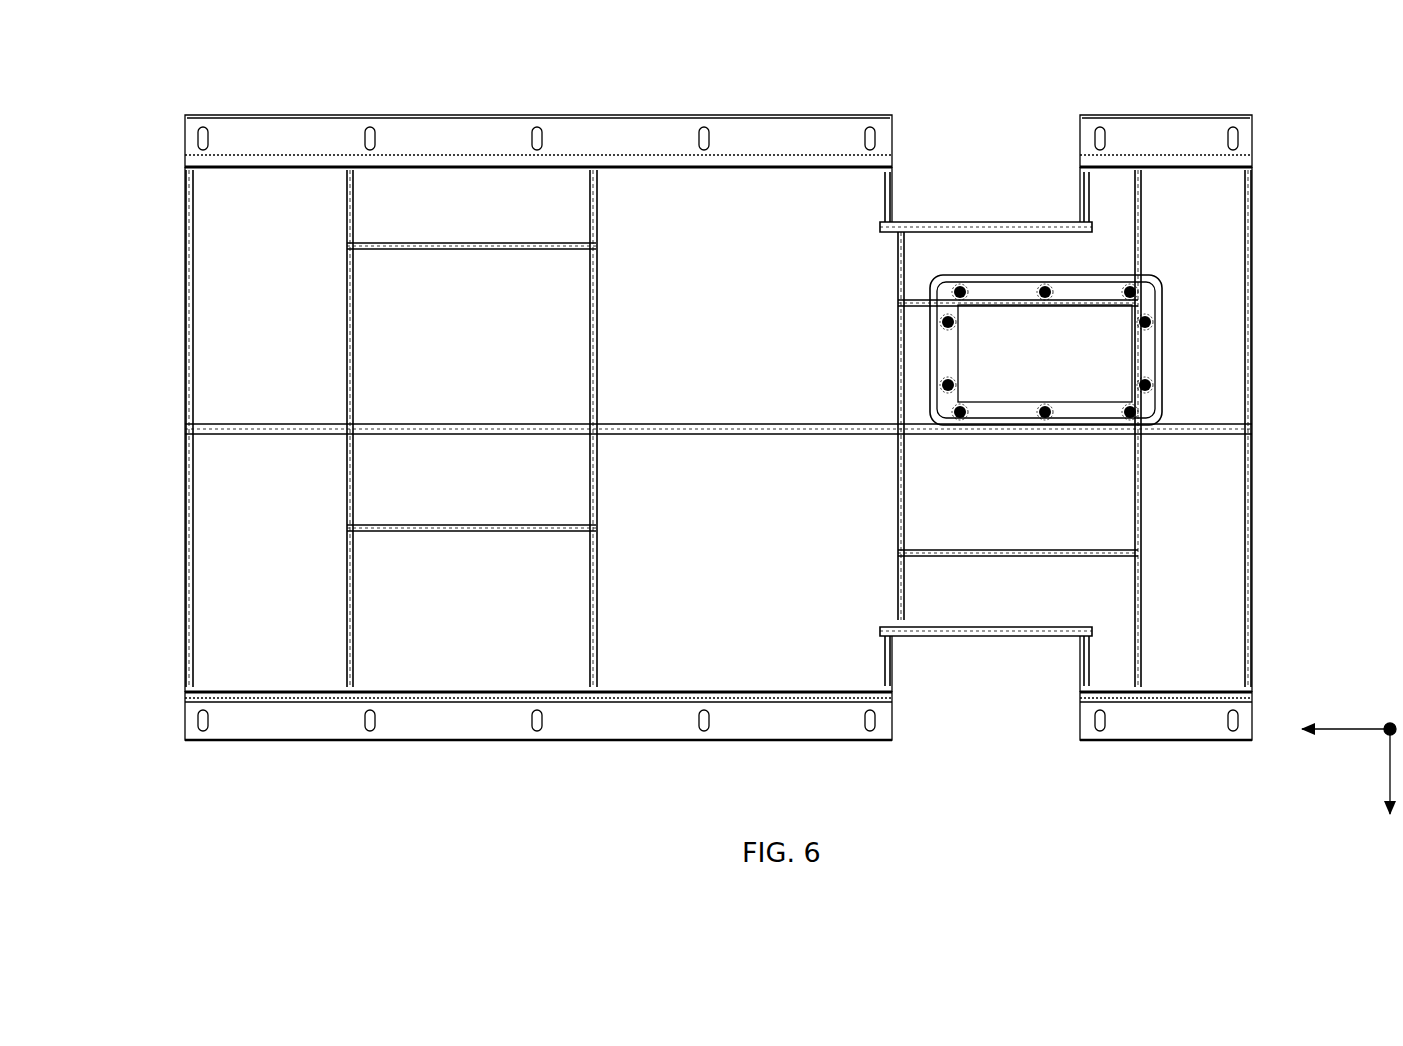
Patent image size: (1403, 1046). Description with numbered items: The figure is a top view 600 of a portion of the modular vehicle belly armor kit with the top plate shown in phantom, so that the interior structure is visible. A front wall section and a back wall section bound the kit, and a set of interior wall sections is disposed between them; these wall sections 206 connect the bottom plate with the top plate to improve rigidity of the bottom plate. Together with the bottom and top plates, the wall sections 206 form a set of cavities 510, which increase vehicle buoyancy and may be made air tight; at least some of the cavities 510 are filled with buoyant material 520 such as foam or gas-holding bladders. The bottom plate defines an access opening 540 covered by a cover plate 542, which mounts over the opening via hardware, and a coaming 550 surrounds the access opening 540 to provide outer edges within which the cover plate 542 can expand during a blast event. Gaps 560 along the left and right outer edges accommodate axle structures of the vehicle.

The top view 600 is at (139, 112).
The wall sections 206 is at (149, 437).
The cavities 510 is at (662, 592).
The buoyant material 520 is at (764, 549).
The access openings 540 is at (1179, 312).
The cover plates 542 is at (1064, 361).
The coamings 550 is at (1153, 365).
The gaps 560 is at (1012, 743).